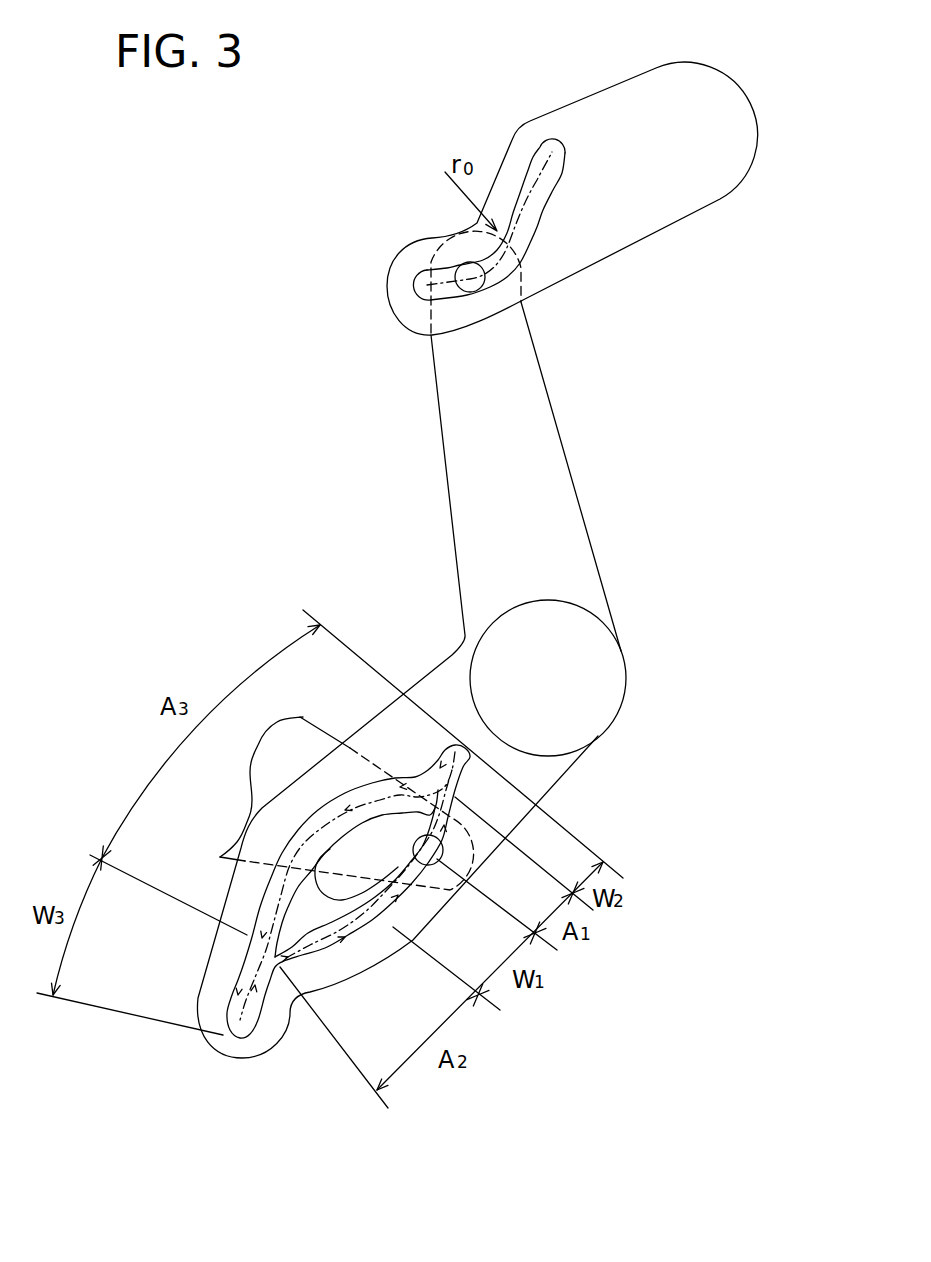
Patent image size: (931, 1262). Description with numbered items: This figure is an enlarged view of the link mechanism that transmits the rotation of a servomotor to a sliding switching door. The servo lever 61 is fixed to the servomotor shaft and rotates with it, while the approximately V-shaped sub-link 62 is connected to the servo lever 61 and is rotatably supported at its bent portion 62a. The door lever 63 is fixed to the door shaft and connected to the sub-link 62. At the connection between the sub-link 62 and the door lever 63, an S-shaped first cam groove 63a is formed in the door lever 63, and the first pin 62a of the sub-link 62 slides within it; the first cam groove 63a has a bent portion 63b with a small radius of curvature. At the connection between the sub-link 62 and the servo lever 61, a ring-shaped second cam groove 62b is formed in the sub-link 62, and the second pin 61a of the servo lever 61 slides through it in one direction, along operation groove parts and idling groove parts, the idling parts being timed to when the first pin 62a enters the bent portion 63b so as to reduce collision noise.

The servo lever 61 is at (314, 720).
The second pin 61a is at (432, 864).
The sub-link 62 is at (573, 540).
The first pin 62a is at (447, 240).
The second cam groove 62b is at (370, 927).
The door lever 63 is at (613, 105).
The first cam groove 63a is at (533, 220).
The bent portion 63b is at (527, 257).